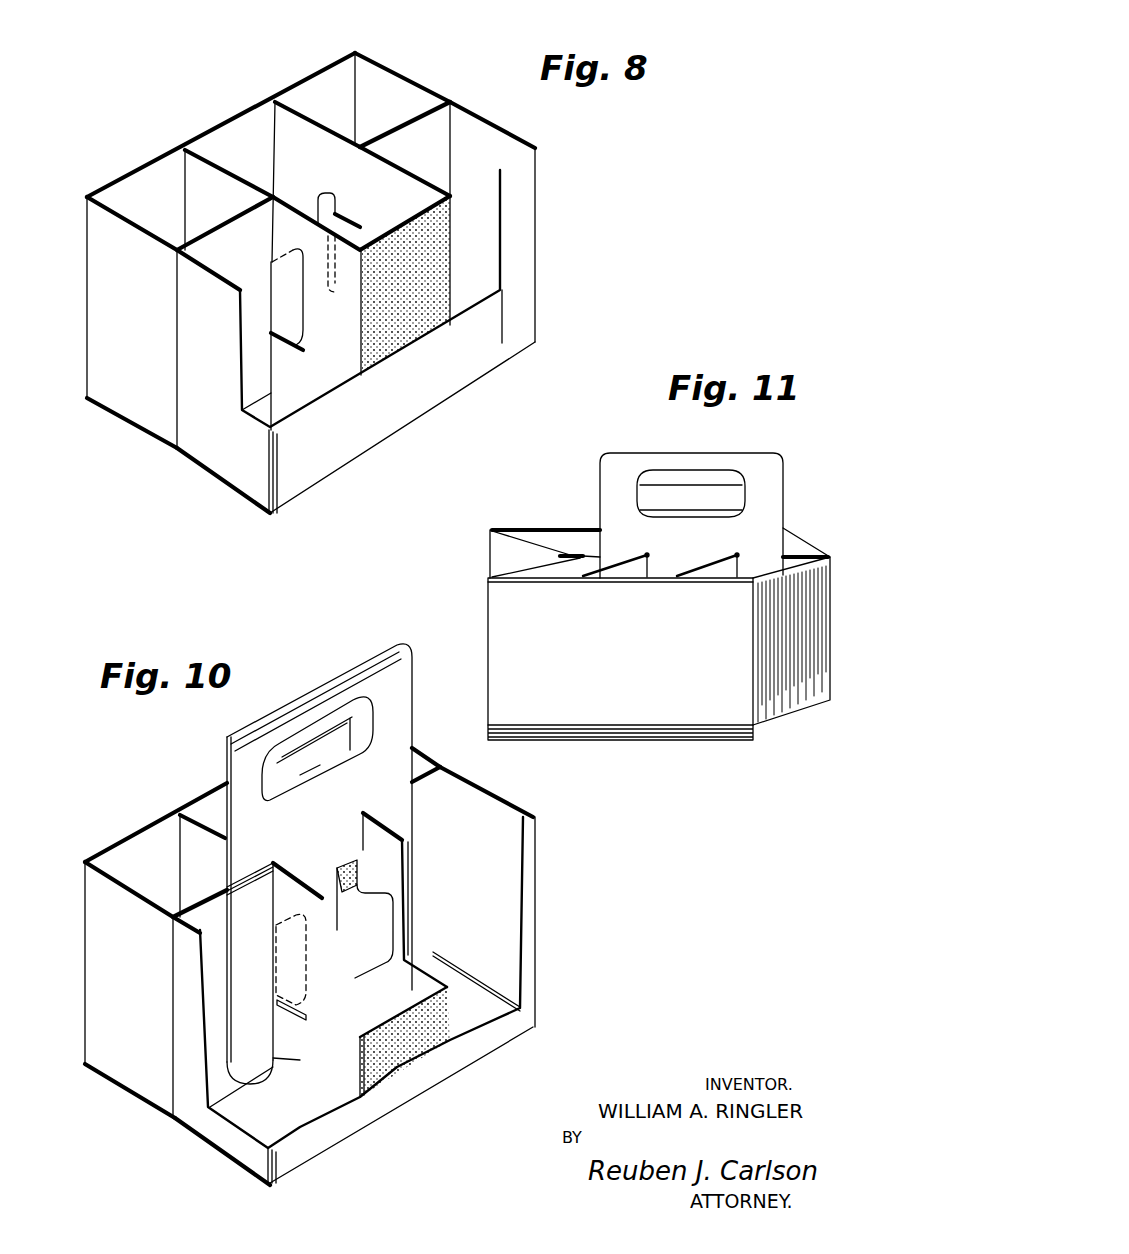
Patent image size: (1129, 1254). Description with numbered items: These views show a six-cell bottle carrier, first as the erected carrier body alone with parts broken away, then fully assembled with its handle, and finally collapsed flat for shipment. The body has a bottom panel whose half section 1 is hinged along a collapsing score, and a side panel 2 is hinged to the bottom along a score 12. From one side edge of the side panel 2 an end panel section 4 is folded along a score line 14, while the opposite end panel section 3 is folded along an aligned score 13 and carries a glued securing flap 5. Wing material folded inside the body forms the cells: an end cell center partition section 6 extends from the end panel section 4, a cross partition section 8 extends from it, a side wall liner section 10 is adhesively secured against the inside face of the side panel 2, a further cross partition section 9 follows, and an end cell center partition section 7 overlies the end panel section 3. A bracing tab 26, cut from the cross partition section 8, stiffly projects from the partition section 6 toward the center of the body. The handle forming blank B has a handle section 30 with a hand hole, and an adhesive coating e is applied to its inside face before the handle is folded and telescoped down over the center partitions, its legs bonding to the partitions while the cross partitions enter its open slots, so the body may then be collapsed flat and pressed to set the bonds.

In FIG. 8, the bottom half section 1 is at (110, 410).
In FIG. 10, the bottom half section 1 is at (105, 1082).
In FIG. 8, the side panel 2 is at (140, 180).
In FIG. 11, the side panel 2 is at (590, 528).
In FIG. 10, the side panel 2 is at (143, 835).
In FIG. 8, the end panel section 3 is at (130, 302).
In FIG. 11, the end panel section 3 is at (502, 548).
In FIG. 10, the end panel section 3 is at (113, 957).
In FIG. 8, the end panel section 4 is at (395, 75).
In FIG. 11, the end panel section 4 is at (800, 540).
In FIG. 10, the end panel section 4 is at (422, 748).
In FIG. 8, the securing flap 5 is at (195, 232).
In FIG. 11, the securing flap 5 is at (565, 553).
In FIG. 10, the securing flap 5 is at (185, 910).
In FIG. 8, the end cell center partition section 6 is at (400, 128).
In FIG. 11, the end cell center partition section 6 is at (805, 552).
In FIG. 10, the end cell center partition section 6 is at (420, 768).
In FIG. 8, the end cell center partition section 7 is at (235, 228).
In FIG. 11, the end cell center partition section 7 is at (590, 558).
In FIG. 10, the end cell center partition section 7 is at (213, 898).
In FIG. 8, the cross partition section 8 is at (300, 105).
In FIG. 10, the cross partition section 8 is at (310, 764).
In FIG. 8, the cross partition section 9 is at (208, 150).
In FIG. 10, the cross partition section 9 is at (180, 830).
In FIG. 8, the side wall liner section 10 is at (248, 120).
In FIG. 10, the side wall liner section 10 is at (218, 805).
In FIG. 8, the score 12 is at (90, 400).
In FIG. 10, the score 12 is at (88, 1066).
In FIG. 8, the score 13 is at (87, 197).
In FIG. 10, the score 13 is at (85, 862).
In FIG. 8, the score line 14 is at (355, 53).
In FIG. 8, the bracing tab 26 is at (352, 210).
In FIG. 10, the handle section 30 is at (224, 762).
In FIG. 10, the coating of adhesive e is at (350, 930).
In FIG. 11, the handle forming blank B is at (778, 448).
In FIG. 10, the handle forming blank B is at (405, 652).